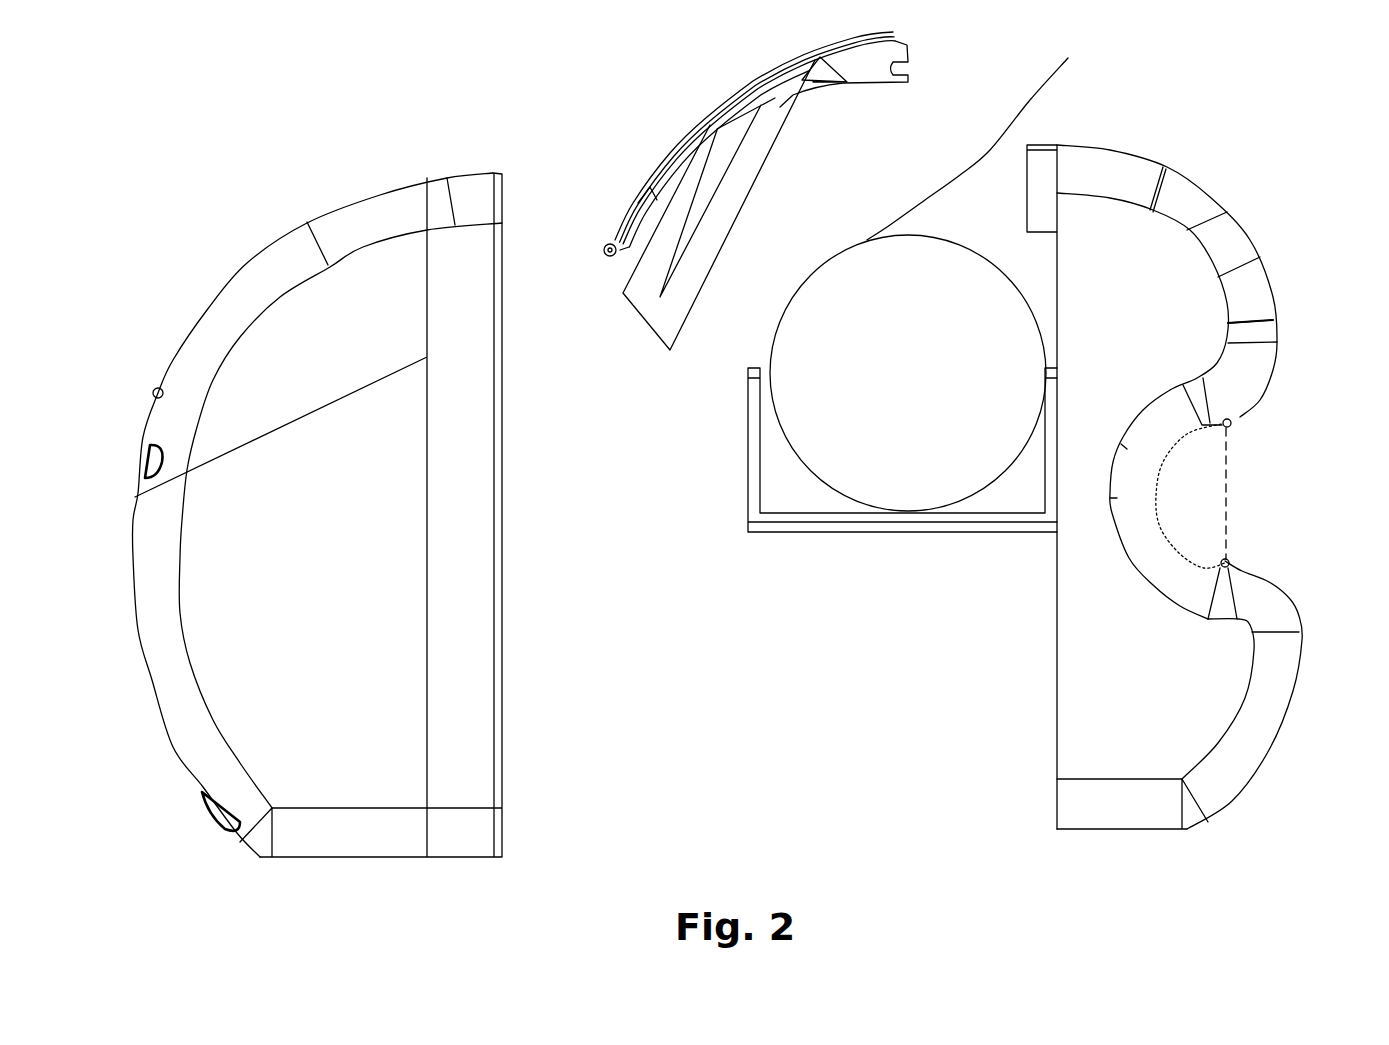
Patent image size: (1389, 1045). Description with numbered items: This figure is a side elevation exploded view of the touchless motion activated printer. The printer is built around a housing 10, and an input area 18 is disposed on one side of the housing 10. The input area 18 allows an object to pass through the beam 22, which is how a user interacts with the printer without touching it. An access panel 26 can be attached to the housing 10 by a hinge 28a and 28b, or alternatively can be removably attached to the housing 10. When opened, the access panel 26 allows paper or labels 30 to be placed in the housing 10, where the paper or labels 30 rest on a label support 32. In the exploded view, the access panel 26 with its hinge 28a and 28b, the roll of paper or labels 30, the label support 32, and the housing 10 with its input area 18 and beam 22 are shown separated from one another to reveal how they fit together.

The housing cover 10 is at (133, 558).
The housing body 18 is at (1310, 501).
The pivot axis 22 is at (1228, 465).
The curved blade assembly 26 is at (710, 103).
The pivot pin 28a is at (153, 391).
The pivot pin 28b is at (603, 247).
The cylindrical roller 30 is at (825, 262).
The bracket 32 is at (745, 443).